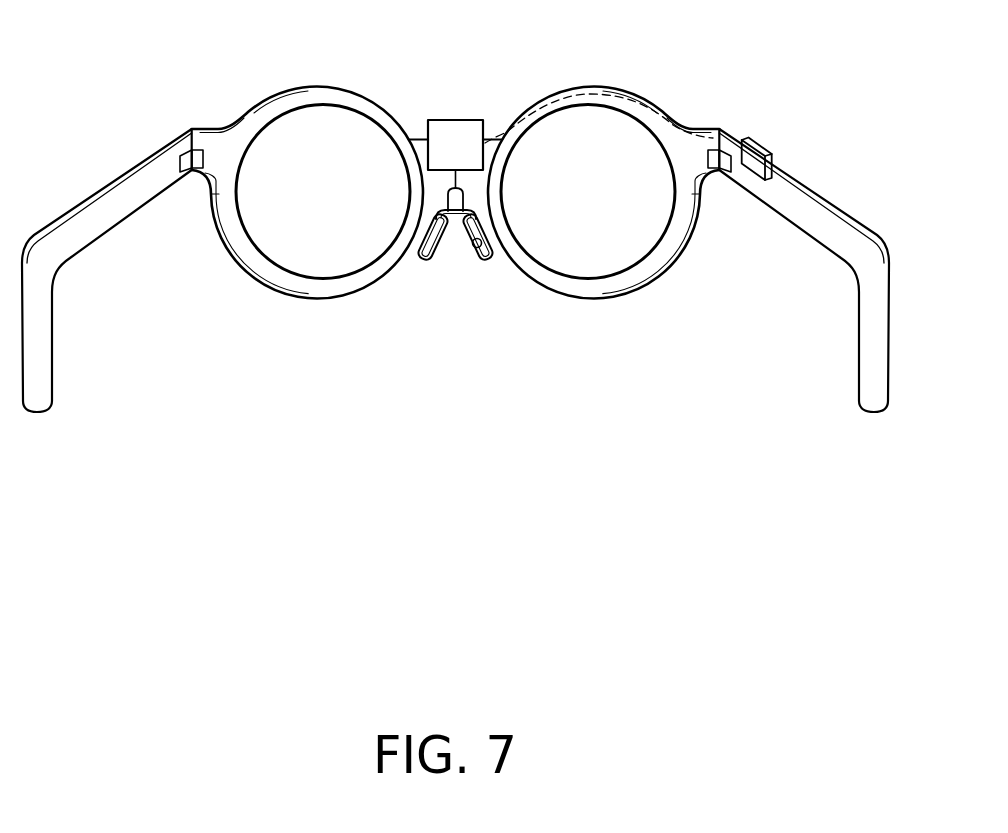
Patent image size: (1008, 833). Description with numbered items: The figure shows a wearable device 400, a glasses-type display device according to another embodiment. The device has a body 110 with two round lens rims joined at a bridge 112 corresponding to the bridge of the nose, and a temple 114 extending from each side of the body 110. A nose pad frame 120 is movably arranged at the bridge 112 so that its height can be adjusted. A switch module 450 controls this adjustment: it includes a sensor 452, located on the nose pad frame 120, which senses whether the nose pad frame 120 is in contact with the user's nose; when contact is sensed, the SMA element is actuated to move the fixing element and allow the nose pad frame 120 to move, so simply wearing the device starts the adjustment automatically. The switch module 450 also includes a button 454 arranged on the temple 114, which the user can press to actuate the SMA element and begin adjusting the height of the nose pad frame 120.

The wearable device 400 is at (858, 531).
The body 110 is at (258, 259).
The bridge 112 is at (418, 137).
The temple 114 is at (817, 210).
The nose pad frame 120 is at (423, 259).
The switch module 450 is at (476, 94).
The sensor 452 is at (487, 261).
The button 454 is at (752, 160).